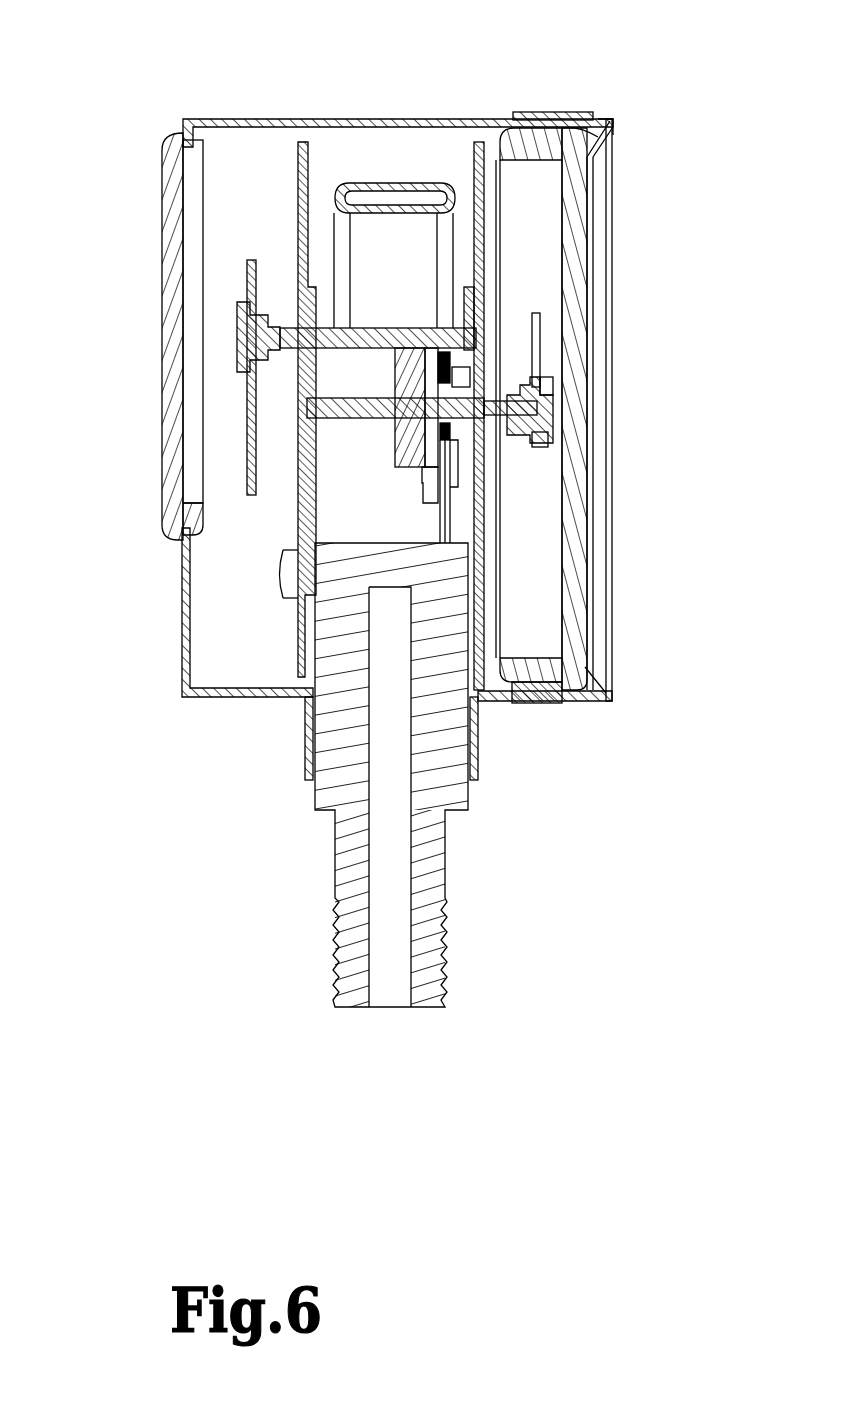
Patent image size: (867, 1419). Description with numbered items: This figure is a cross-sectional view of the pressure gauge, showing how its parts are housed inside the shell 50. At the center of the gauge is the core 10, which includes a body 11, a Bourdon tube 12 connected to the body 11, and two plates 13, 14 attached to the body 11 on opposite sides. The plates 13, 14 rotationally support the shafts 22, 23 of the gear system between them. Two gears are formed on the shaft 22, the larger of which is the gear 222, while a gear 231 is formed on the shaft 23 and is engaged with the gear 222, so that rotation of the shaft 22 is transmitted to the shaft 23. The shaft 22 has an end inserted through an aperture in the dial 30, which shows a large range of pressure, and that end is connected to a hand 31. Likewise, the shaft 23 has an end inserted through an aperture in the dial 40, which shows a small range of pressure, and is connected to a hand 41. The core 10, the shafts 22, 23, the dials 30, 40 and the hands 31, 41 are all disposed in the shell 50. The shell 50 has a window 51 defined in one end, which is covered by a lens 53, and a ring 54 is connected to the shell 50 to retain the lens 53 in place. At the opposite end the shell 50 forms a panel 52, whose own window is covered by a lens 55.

The core 10 is at (288, 931).
The body 11 is at (322, 800).
The Bourdon tube 12 is at (429, 204).
The plate 13 is at (478, 297).
The plate 14 is at (300, 378).
The shaft 22 is at (553, 403).
The gear 222 is at (548, 440).
The shaft 23 is at (237, 337).
The gear 231 is at (478, 336).
The dial 30 is at (495, 200).
The hand 31 is at (553, 382).
The dial 40 is at (300, 228).
The hand 41 is at (252, 268).
The shell 50 is at (370, 119).
The window 51 is at (540, 698).
The panel 52 is at (182, 615).
The lens 53 is at (548, 140).
The ring 54 is at (601, 115).
The lens 55 is at (160, 440).